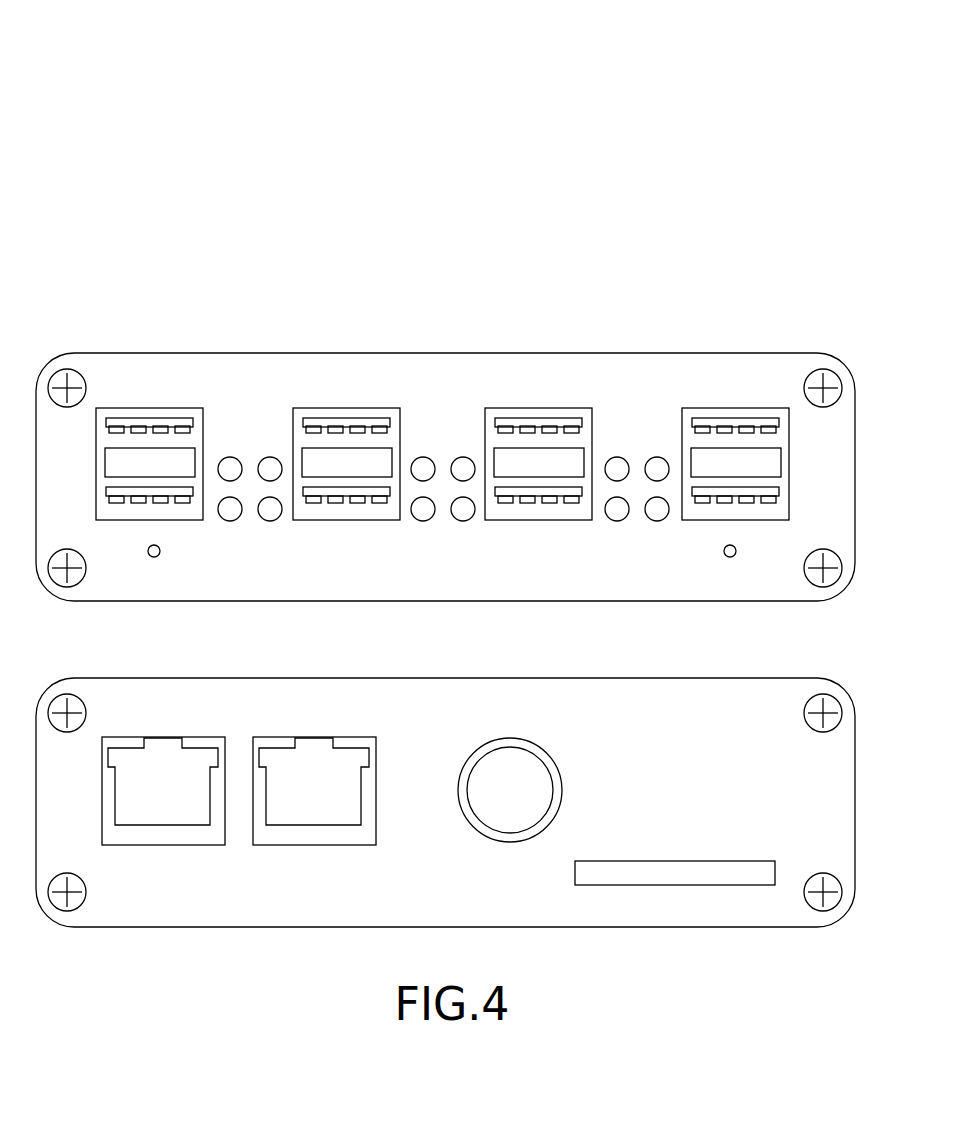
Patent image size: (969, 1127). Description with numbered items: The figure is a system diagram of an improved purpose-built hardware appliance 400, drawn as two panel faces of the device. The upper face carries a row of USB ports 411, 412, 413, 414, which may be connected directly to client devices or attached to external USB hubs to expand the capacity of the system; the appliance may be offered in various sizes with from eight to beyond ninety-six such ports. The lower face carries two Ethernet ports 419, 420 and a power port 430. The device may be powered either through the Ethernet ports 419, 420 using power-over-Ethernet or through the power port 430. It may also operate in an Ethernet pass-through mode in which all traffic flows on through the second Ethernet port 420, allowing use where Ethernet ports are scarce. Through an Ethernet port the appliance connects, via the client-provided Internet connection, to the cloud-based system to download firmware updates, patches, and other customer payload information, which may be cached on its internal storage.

The purpose-built hardware appliance 400 is at (803, 140).
The USB port 411 is at (150, 408).
The USB port 412 is at (345, 408).
The USB port 413 is at (540, 408).
The USB port 414 is at (740, 408).
The Ethernet port 419 is at (163, 845).
The second Ethernet port 420 is at (313, 846).
The power port 430 is at (510, 842).